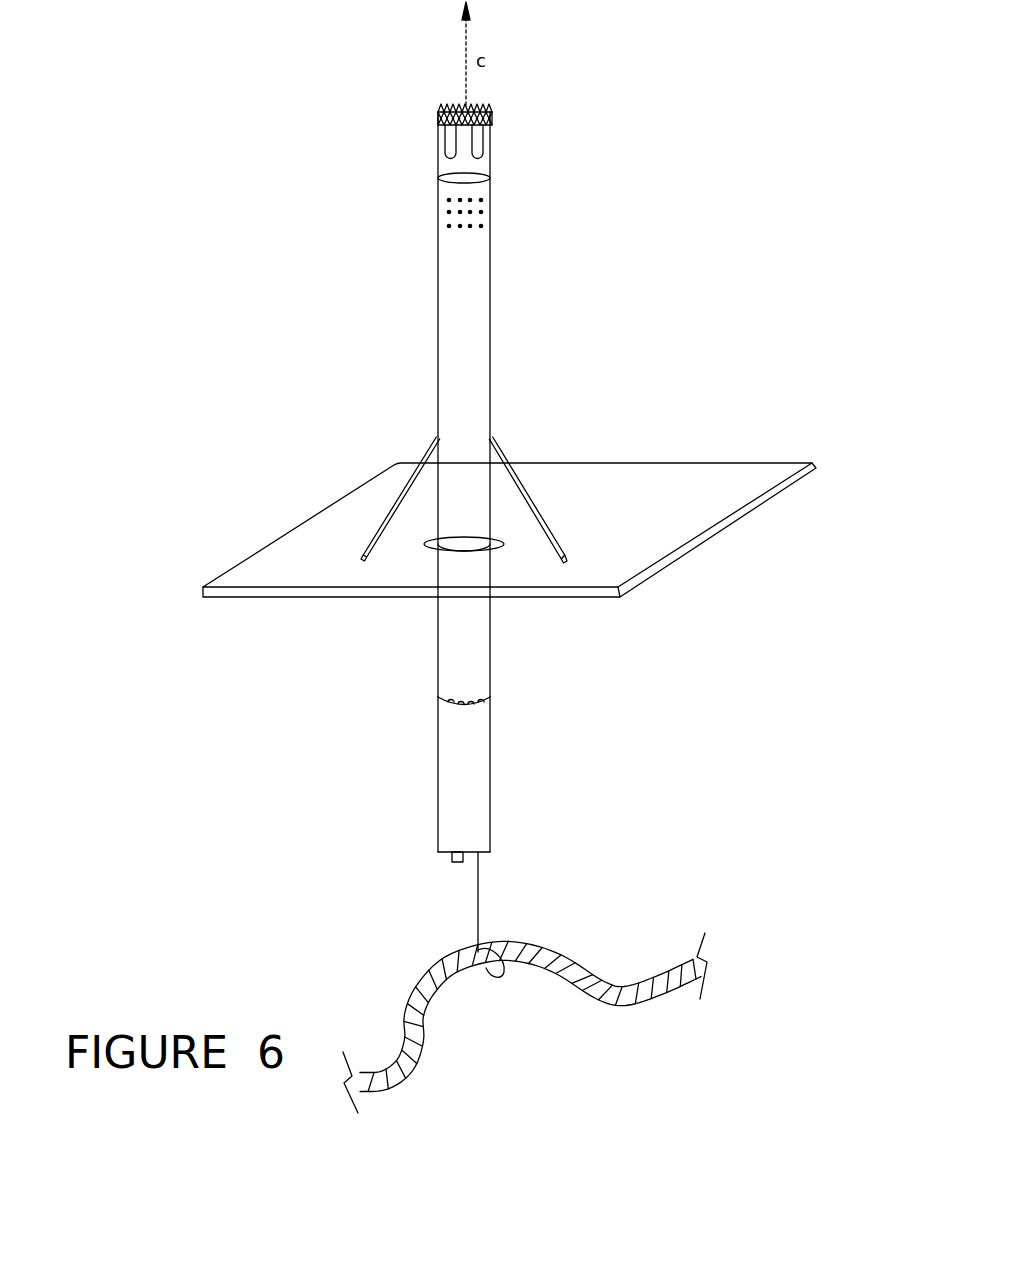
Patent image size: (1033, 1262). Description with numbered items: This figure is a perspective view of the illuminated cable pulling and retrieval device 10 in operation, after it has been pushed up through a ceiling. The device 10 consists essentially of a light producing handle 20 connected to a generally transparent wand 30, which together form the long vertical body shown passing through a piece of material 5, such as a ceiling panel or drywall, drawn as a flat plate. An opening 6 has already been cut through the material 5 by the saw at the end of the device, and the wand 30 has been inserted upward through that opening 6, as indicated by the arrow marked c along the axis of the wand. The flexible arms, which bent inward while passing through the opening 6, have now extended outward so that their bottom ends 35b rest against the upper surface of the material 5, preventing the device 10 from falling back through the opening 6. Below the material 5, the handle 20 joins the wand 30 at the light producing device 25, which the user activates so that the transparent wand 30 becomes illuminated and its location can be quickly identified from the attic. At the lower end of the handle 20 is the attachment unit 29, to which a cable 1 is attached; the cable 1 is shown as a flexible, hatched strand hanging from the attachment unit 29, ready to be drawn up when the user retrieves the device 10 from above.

The illuminated cable pulling and retrieval device 10 is at (175, 118).
The transparent wand 30 is at (479, 327).
The material 5 is at (660, 510).
The bottom ends of the flexible arms 35b is at (363, 559).
The opening 6 is at (495, 549).
The light producing device 25 is at (440, 696).
The light producing handle 20 is at (477, 799).
The attachment unit 29 is at (482, 898).
The cable 1 is at (418, 1002).